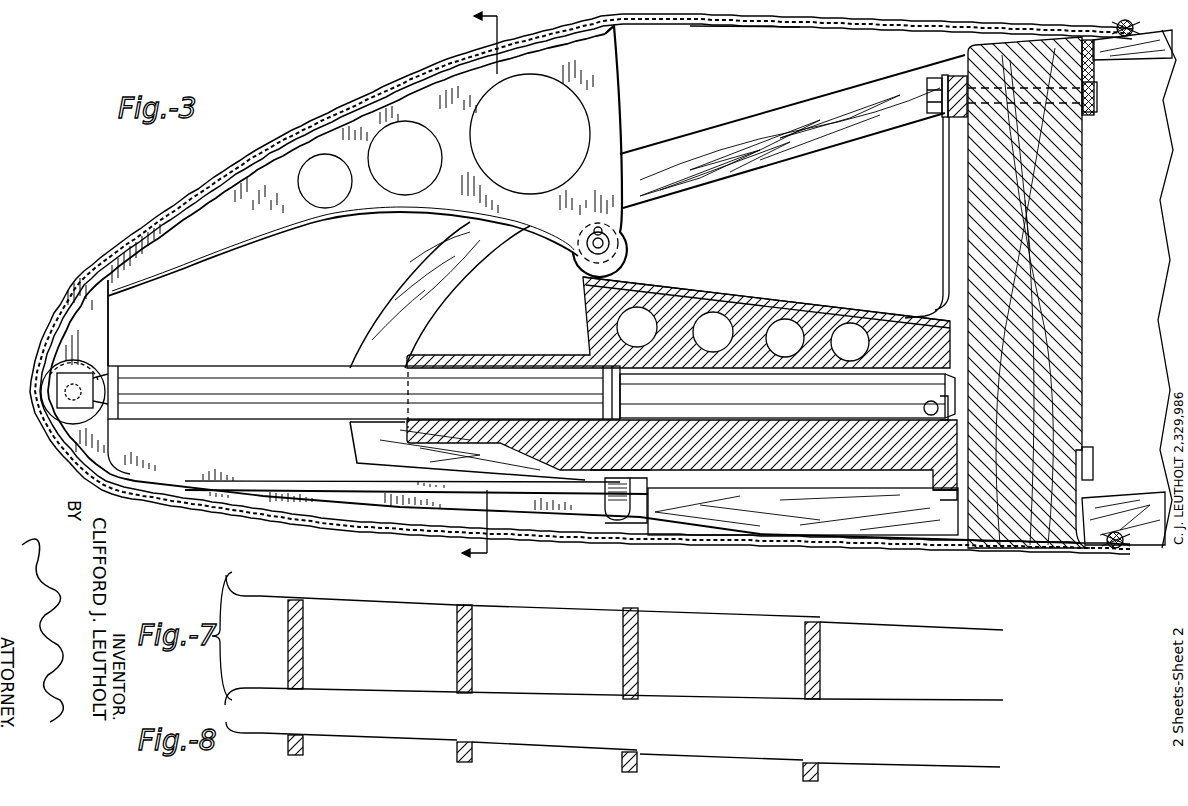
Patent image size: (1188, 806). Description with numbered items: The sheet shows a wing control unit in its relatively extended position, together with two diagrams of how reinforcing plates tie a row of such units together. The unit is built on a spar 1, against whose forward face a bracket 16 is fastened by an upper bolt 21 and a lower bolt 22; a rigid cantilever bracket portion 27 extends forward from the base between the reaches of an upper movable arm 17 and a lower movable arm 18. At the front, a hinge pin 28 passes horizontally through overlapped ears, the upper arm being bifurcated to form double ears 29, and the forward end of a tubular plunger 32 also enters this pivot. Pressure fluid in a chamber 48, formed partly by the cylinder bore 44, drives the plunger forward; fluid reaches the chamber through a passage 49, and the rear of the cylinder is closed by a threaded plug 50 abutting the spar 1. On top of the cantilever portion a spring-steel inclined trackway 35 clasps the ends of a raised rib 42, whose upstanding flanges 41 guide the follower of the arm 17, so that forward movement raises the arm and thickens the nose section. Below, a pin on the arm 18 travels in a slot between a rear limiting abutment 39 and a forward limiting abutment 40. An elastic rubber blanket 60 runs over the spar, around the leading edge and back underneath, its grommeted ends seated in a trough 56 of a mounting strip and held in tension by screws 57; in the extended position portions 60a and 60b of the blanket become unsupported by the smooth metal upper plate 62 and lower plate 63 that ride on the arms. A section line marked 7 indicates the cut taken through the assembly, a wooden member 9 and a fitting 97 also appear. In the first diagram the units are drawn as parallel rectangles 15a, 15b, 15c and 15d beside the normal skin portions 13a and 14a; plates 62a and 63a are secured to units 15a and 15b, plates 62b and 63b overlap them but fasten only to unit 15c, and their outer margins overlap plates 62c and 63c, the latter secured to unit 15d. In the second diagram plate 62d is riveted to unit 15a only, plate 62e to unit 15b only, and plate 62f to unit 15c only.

In FIG. 3, the spar 1 is at (1067, 356).
In FIG. 3, the section line 7- 7 is at (490, 289).
In FIG. 3, the wooden strut 9 is at (826, 92).
In FIG. 3, the bracket member 16 is at (942, 285).
In FIG. 3, the upper movable arm member 17 is at (437, 203).
In FIG. 3, the lower movable arm member 18 is at (350, 472).
In FIG. 3, the upper bolt 21 is at (926, 95).
In FIG. 3, the lower bolt 22 is at (1093, 455).
In FIG. 3, the cantilever member or bracket portion 27 is at (548, 356).
In FIG. 3, the hinge pin 28 is at (85, 368).
In FIG. 3, the ear portions of upper arm 29 is at (75, 420).
In FIG. 3, the plunger 32 is at (285, 375).
In FIG. 3, the inclined trackway 35 is at (722, 292).
In FIG. 3, the limiting abutment 39 is at (945, 498).
In FIG. 3, the limiting abutment 40 is at (563, 476).
In FIG. 3, the upstanding flanges 41 is at (835, 303).
In FIG. 3, the raised rib 42 is at (780, 298).
In FIG. 3, the cylinder bore 44 is at (742, 378).
In FIG. 3, the pressure chamber 48 is at (842, 420).
In FIG. 3, the passage 49 is at (924, 407).
In FIG. 3, the threaded plug 50 is at (938, 422).
In FIG. 3, the longitudinal trough 56 is at (1123, 80).
In FIG. 3, the screws 57 is at (1115, 27).
In FIG. 3, the cover member or blanket 60 is at (356, 96).
In FIG. 3, the unsupported portion of blanket 60a is at (740, 27).
In FIG. 3, the unsupported portion of blanket 60b is at (755, 530).
In FIG. 3, the upper plate 62 is at (292, 130).
In FIG. 3, the lower plate 63 is at (236, 515).
In FIG. 3, the clamp fitting 97 is at (648, 492).
In FIG. 7, the normal wing skin element portion 13a is at (265, 597).
In FIG. 8, the normal wing skin element portion 13a is at (264, 733).
In FIG. 7, the normal wing skin element portion 14a is at (270, 675).
In FIG. 7, the control unit 15a is at (304, 650).
In FIG. 8, the control unit 15a is at (304, 748).
In FIG. 7, the control unit 15b is at (456, 655).
In FIG. 8, the control unit 15b is at (473, 760).
In FIG. 7, the control unit 15c is at (622, 655).
In FIG. 8, the control unit 15c is at (640, 765).
In FIG. 7, the control unit 15d is at (804, 660).
In FIG. 8, the control unit 15d is at (803, 773).
In FIG. 7, the upper plate 62a is at (358, 599).
In FIG. 7, the upper plate 62b is at (604, 610).
In FIG. 7, the upper plate 62c is at (880, 624).
In FIG. 8, the plate 62d is at (378, 742).
In FIG. 8, the plate 62e is at (538, 752).
In FIG. 8, the plate 62f is at (730, 756).
In FIG. 7, the lower plate 63a is at (358, 698).
In FIG. 7, the lower plate 63b is at (570, 701).
In FIG. 7, the lower plate 63c is at (890, 702).